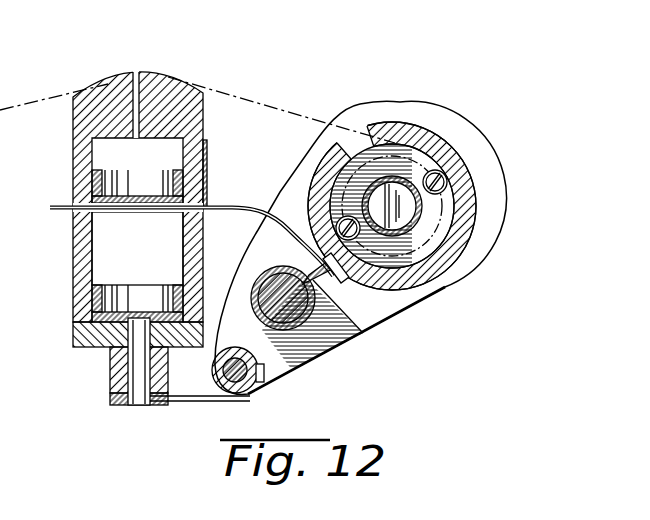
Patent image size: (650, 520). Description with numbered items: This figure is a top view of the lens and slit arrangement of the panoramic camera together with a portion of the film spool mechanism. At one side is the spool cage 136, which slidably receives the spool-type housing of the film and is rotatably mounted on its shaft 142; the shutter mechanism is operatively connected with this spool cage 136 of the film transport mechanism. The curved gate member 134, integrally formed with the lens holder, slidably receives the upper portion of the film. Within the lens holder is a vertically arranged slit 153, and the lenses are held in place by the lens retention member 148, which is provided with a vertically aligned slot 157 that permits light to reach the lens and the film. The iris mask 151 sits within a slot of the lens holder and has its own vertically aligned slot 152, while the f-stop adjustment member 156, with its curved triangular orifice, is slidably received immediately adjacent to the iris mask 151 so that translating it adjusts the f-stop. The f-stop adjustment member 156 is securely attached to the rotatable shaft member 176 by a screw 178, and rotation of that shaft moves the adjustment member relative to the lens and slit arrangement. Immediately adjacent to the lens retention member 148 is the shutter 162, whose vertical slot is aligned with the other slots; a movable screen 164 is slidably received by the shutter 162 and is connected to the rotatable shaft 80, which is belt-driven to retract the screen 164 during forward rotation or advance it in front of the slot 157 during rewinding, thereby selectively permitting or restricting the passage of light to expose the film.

The vertically arranged slit 153 is at (136, 96).
The curved gate member 134 is at (168, 82).
The iris mask 151 is at (200, 153).
The f-stop adjustment member 156 is at (231, 204).
The shaft 142 is at (398, 182).
The vertically aligned slot 152 is at (137, 211).
The lens retention member 148 is at (79, 333).
The vertically aligned slot 157 is at (133, 332).
The shutter 162 is at (110, 377).
The movable screen 164 is at (200, 424).
The rotatable shaft 80 is at (239, 381).
The rotatable shaft member 176 is at (303, 328).
The screw 178 is at (340, 280).
The spool cage 136 is at (432, 268).